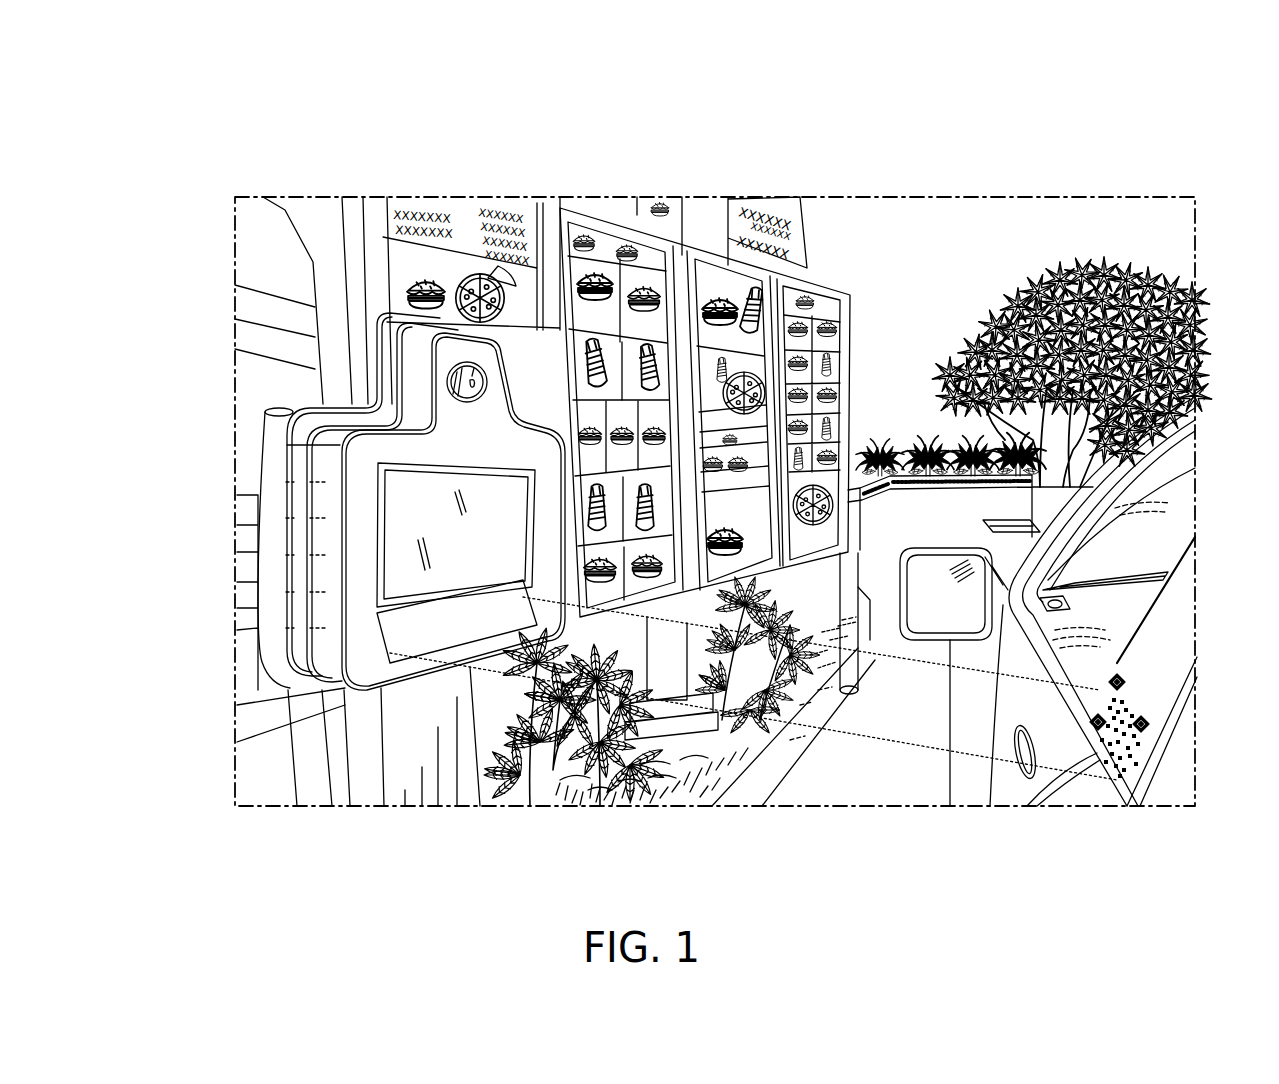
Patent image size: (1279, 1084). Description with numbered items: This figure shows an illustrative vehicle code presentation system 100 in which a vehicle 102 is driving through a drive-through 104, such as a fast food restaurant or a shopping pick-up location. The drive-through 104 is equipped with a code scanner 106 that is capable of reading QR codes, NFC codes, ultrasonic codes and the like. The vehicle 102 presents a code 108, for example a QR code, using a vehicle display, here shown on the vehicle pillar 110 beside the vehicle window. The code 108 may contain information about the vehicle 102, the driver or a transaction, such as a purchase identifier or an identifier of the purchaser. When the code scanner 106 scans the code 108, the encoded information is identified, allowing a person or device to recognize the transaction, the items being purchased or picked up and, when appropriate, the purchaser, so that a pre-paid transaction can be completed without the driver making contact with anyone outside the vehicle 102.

The vehicle code presentation system 100 is at (218, 62).
The vehicle 102 is at (989, 546).
The drive-through 104 is at (873, 282).
The code scanner 106 is at (411, 501).
The code 108 is at (1118, 674).
The vehicle pillar 110 is at (1192, 590).